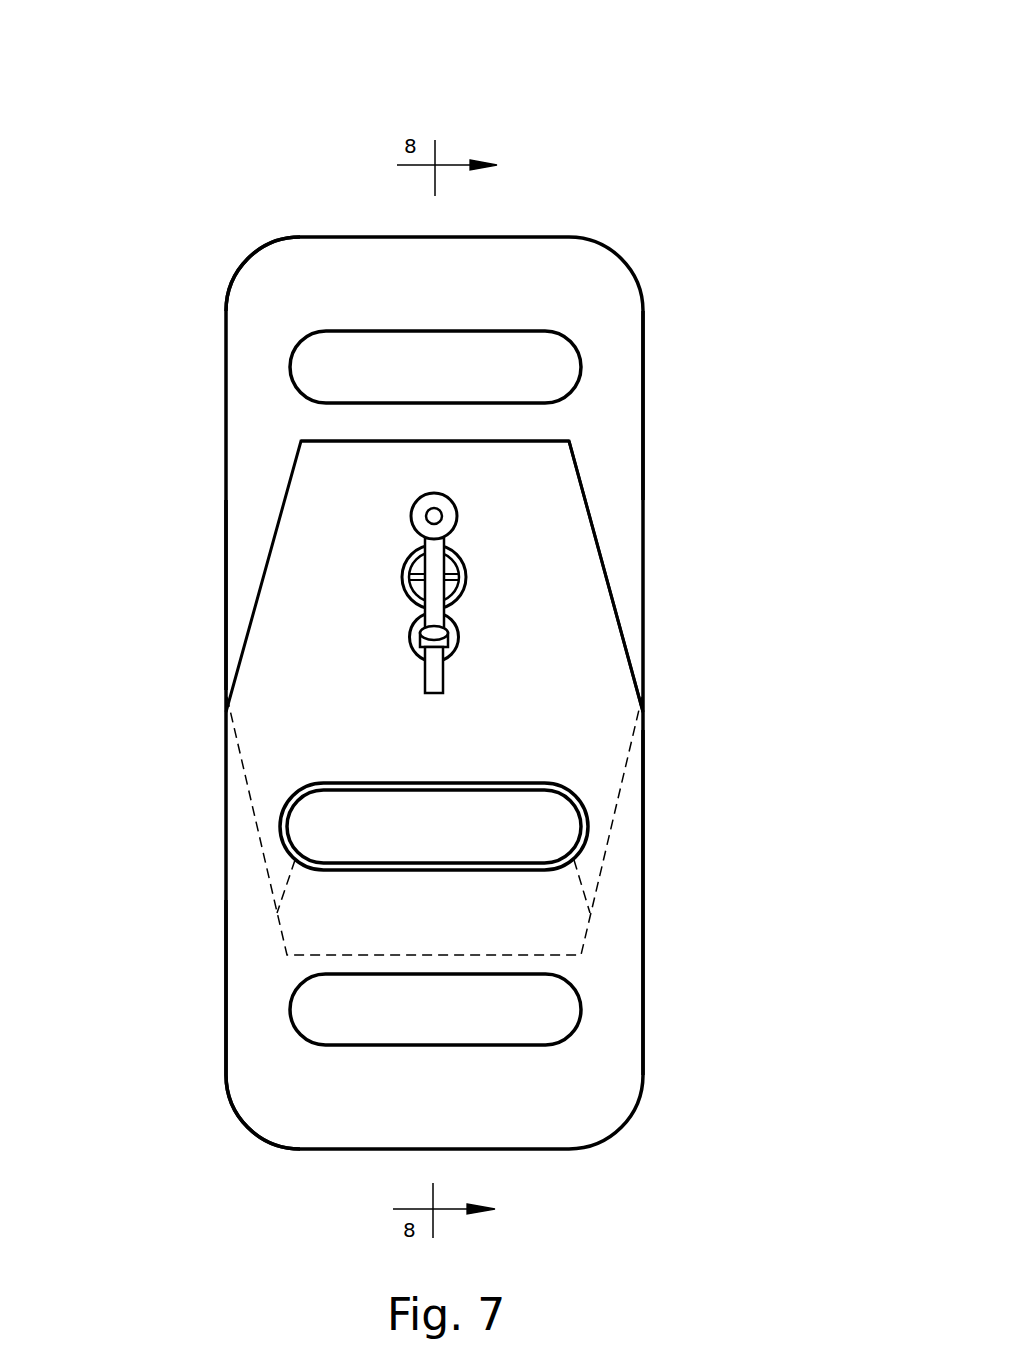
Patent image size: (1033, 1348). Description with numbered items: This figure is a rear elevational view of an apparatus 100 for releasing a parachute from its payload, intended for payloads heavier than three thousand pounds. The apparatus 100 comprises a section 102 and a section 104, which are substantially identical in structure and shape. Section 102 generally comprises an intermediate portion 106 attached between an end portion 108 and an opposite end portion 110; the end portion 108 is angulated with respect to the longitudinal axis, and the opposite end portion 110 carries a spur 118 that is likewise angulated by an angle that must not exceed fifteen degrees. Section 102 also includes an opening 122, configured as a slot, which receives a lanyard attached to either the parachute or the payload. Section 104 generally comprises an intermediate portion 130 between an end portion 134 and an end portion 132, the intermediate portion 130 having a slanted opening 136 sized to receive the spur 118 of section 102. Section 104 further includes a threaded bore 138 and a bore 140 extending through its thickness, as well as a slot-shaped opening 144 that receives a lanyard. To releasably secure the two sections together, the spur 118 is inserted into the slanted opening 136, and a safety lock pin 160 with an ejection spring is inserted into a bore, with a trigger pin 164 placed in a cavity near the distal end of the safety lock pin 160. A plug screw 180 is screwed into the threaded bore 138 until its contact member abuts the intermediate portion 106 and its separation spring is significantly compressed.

The apparatus 100 is at (257, 80).
The section 102 is at (259, 250).
The section 104 is at (597, 545).
The intermediate portion 106 is at (226, 660).
The end portion 108 is at (645, 325).
The opposite end portion 110 is at (262, 870).
The spur 118 is at (358, 815).
The opening 122 is at (438, 355).
The intermediate portion 130 is at (568, 697).
The end portion 132 is at (307, 440).
The end portion 134 is at (272, 1148).
The slanted opening 136 is at (463, 787).
The threaded bore 138 is at (455, 560).
The bore 140 is at (455, 648).
The opening 144 is at (343, 1025).
The safety lock pin 160 is at (412, 650).
The trigger pin 164 is at (457, 513).
The plug screw 180 is at (417, 566).